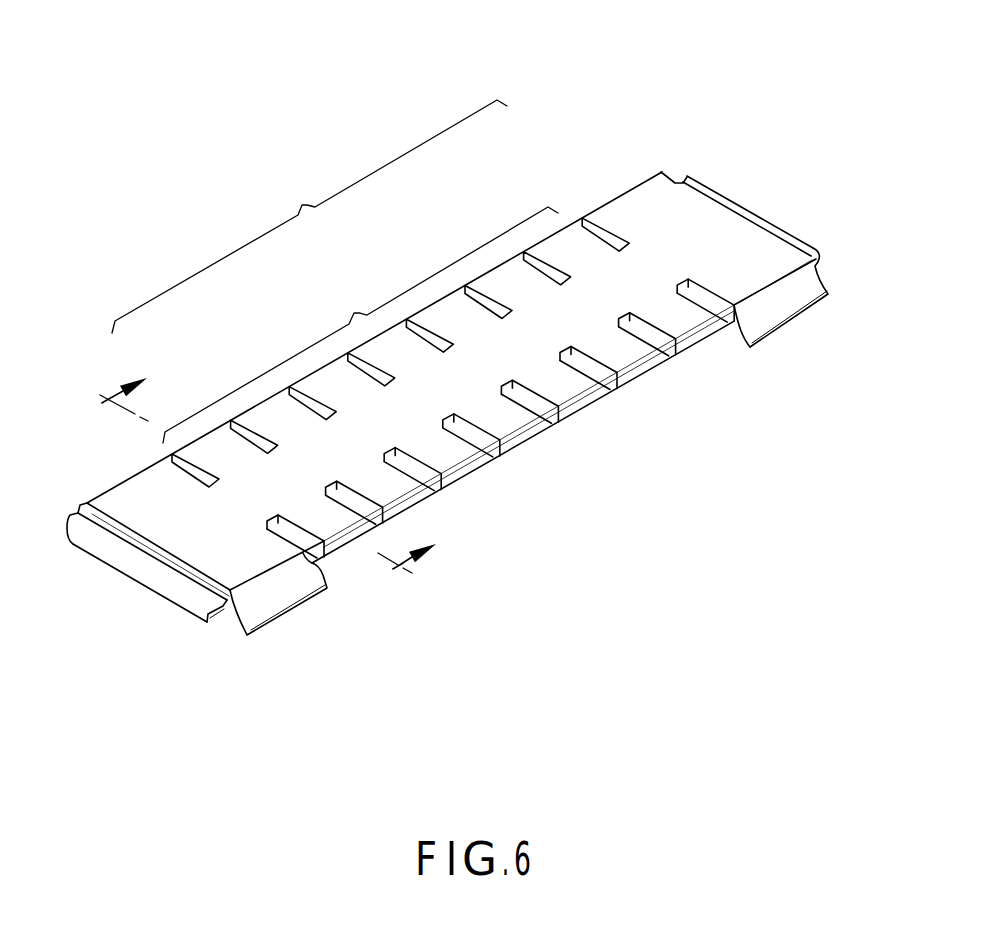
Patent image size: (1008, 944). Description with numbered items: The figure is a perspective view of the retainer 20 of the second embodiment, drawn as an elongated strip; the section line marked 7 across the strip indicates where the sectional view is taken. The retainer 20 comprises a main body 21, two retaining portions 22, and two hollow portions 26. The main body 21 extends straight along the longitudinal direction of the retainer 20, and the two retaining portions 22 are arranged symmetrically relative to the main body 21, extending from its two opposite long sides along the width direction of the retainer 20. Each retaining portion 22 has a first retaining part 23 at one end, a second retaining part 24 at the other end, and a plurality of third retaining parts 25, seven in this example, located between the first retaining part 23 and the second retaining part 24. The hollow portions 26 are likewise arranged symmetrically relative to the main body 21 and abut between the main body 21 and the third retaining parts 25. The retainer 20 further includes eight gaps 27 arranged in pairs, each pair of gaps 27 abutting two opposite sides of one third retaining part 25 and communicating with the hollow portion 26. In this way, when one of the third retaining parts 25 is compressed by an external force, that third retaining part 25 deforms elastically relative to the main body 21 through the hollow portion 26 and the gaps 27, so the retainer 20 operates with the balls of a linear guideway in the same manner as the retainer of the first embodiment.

The retainer 20 is at (653, 79).
The main body 21 is at (225, 515).
The retaining portion 22 is at (309, 216).
The first retaining part 23 is at (127, 490).
The second retaining part 24 is at (648, 202).
The third retaining part 25 is at (356, 312).
The hollow portion 26 is at (617, 395).
The gap 27 is at (470, 430).
The section line 7- 7 is at (268, 477).